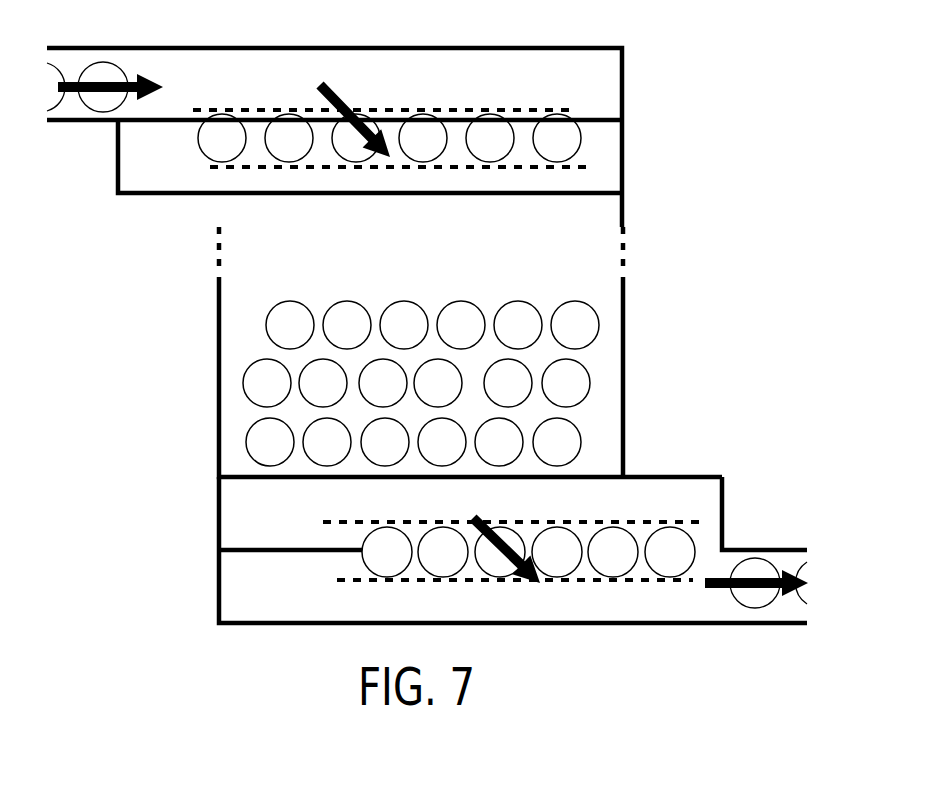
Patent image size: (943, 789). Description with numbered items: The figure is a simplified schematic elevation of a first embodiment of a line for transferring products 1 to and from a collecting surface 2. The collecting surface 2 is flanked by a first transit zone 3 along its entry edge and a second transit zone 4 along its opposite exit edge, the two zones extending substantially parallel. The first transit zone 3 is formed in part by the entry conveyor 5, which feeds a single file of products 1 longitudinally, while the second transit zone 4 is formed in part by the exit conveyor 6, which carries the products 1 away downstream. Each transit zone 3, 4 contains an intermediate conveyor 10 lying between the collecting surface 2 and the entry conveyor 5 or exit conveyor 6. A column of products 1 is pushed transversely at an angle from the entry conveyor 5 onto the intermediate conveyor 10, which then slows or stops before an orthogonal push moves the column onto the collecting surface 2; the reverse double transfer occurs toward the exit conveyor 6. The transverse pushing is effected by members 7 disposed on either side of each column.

The products 1 is at (577, 383).
The collecting surface 2 is at (207, 413).
The first transit zone 3 is at (648, 113).
The second transit zone 4 is at (197, 552).
The entry conveyor 5 is at (603, 77).
The exit conveyor 6 is at (235, 587).
The members 7 is at (190, 113).
The intermediate conveyor 10 is at (605, 152).